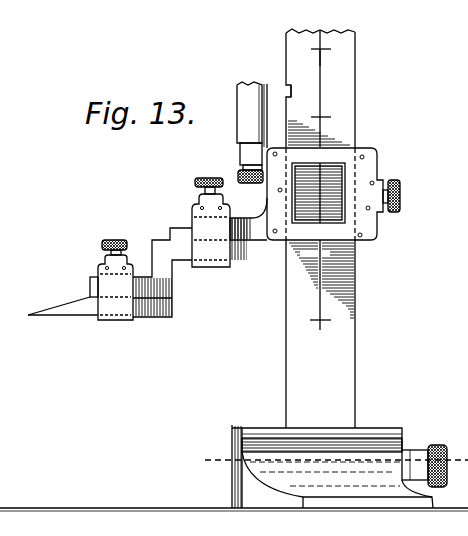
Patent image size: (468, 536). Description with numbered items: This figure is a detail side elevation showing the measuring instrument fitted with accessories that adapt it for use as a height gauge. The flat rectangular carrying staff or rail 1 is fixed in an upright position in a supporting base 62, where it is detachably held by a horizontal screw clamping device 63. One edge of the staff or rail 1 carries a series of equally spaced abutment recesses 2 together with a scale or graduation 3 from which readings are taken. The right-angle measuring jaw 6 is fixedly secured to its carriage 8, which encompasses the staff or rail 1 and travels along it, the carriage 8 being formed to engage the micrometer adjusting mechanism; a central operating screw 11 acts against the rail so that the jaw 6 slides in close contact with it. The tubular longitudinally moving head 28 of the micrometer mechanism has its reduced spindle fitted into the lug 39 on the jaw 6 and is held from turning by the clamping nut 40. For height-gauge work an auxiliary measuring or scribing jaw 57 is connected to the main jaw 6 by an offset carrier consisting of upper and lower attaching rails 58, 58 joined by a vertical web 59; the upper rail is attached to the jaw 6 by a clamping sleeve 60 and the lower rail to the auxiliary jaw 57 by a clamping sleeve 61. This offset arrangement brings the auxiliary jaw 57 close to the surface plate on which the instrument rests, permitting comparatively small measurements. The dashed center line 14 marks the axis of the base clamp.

The carrying staff or rail 1 is at (355, 80).
The abutment recesses 2 is at (292, 91).
The scale or graduation 3 is at (321, 52).
The measuring jaw 6 is at (261, 233).
The carriage 8 is at (378, 154).
The central operating screw 11 is at (401, 198).
The axis line 14 is at (327, 461).
The longitudinally moving head 28 is at (240, 107).
The lug 39 is at (242, 150).
The clamping nut 40 is at (249, 188).
The auxiliary measuring jaw 57 is at (82, 311).
The attaching rails 58 is at (90, 283).
The vertical web 59 is at (160, 257).
The clamping sleeve 60 is at (219, 222).
The clamping sleeve 61 is at (115, 280).
The supporting base 62 is at (332, 466).
The horizontal screw clamping device 63 is at (415, 451).